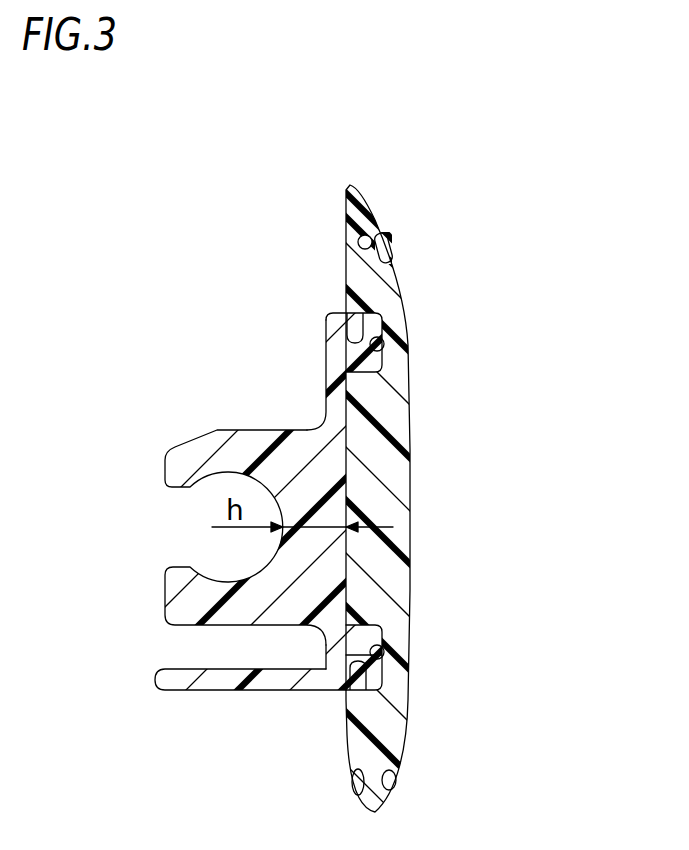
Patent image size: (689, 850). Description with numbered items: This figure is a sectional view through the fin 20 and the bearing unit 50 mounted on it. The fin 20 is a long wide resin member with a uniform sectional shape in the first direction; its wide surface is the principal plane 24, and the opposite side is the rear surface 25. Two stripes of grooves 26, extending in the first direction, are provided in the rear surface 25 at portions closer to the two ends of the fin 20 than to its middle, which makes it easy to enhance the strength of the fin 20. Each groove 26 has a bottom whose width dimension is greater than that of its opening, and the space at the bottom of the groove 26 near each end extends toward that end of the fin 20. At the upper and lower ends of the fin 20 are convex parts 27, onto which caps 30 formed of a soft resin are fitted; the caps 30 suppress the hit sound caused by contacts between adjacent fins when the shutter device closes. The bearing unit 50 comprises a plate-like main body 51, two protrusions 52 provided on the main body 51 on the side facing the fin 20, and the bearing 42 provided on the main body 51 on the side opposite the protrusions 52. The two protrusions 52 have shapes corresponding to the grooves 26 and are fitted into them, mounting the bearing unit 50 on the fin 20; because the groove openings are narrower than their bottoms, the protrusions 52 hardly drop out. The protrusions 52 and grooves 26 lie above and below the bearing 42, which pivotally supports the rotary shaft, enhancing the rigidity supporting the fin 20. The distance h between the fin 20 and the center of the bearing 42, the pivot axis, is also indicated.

The fin 20 is at (415, 508).
The principal plane 24 is at (410, 488).
The rear surface 25 is at (346, 569).
The groove 26 is at (384, 348).
The convex part 27 is at (358, 231).
The cap 30 is at (369, 208).
The bearing 42 is at (180, 580).
The bearing unit 50 is at (284, 559).
The main body 51 is at (333, 408).
The protrusion 52 is at (342, 317).